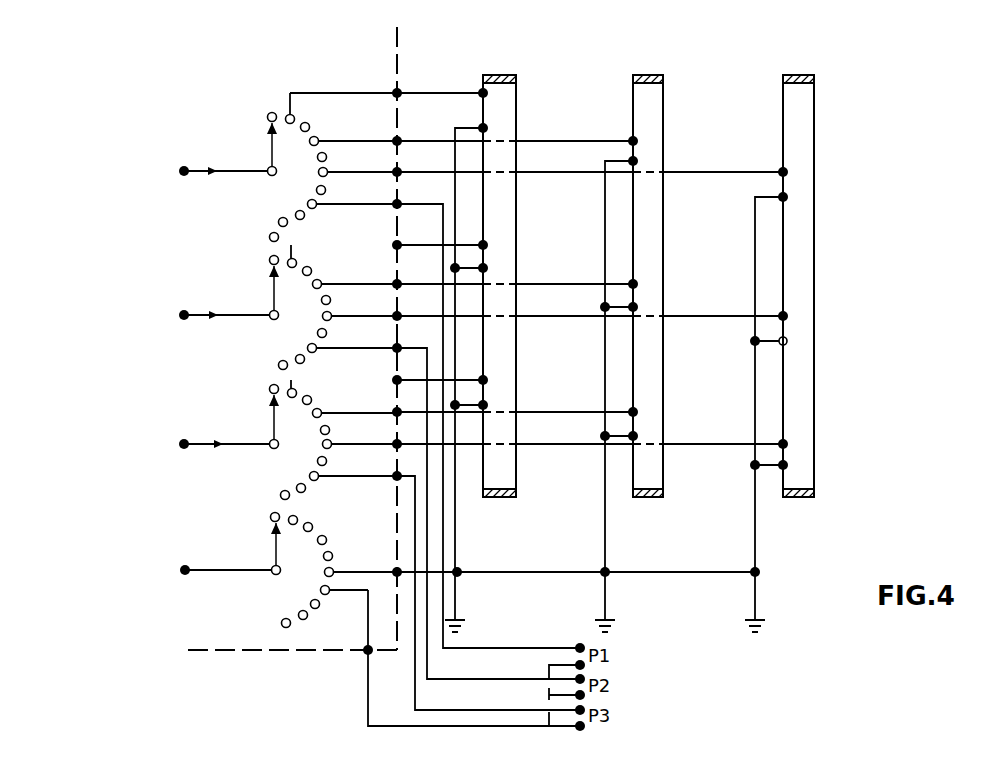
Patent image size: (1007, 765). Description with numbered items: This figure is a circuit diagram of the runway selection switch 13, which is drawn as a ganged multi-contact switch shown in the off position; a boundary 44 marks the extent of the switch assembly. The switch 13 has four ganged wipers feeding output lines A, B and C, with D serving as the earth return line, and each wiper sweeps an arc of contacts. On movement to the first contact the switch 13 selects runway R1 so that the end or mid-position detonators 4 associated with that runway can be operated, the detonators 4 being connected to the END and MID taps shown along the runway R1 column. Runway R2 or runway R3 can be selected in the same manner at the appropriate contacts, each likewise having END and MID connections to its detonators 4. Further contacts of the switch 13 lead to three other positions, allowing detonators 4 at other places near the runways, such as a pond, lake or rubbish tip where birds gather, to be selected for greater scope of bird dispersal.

The detonation device 4 is at (492, 258).
The runway selection switch 13 is at (213, 202).
The boundary line of the switch assembly 44 is at (420, 86).
The runway R1 is at (495, 118).
The runway R2 is at (645, 113).
The runway R3 is at (797, 113).